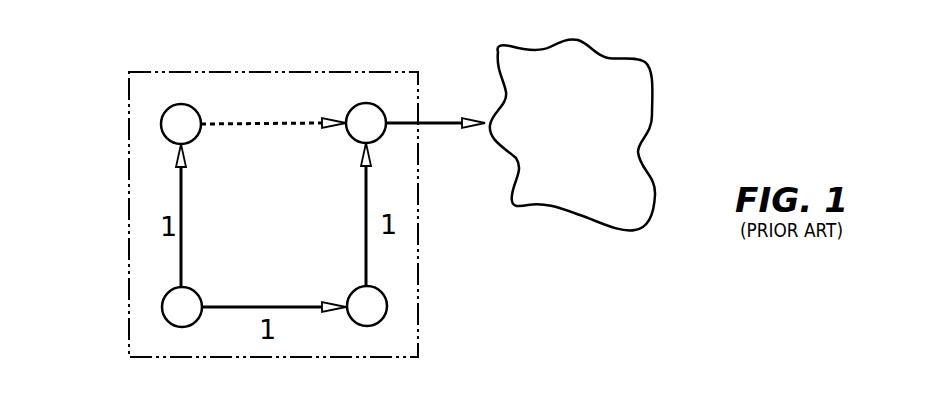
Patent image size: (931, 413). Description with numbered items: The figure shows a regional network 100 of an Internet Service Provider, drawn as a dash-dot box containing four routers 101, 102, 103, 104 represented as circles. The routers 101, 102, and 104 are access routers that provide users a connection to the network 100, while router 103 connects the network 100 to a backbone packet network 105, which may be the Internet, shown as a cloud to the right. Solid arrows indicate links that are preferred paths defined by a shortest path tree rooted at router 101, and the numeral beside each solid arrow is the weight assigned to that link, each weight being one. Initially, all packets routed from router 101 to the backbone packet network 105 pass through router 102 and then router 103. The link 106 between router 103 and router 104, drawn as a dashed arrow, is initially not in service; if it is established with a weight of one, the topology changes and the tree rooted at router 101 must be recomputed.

The regional network 100 is at (128, 210).
The router 101 is at (182, 327).
The router 102 is at (367, 326).
The router 103 is at (367, 103).
The router 104 is at (181, 104).
The backbone packet network 105 is at (604, 56).
The link 106 is at (247, 123).